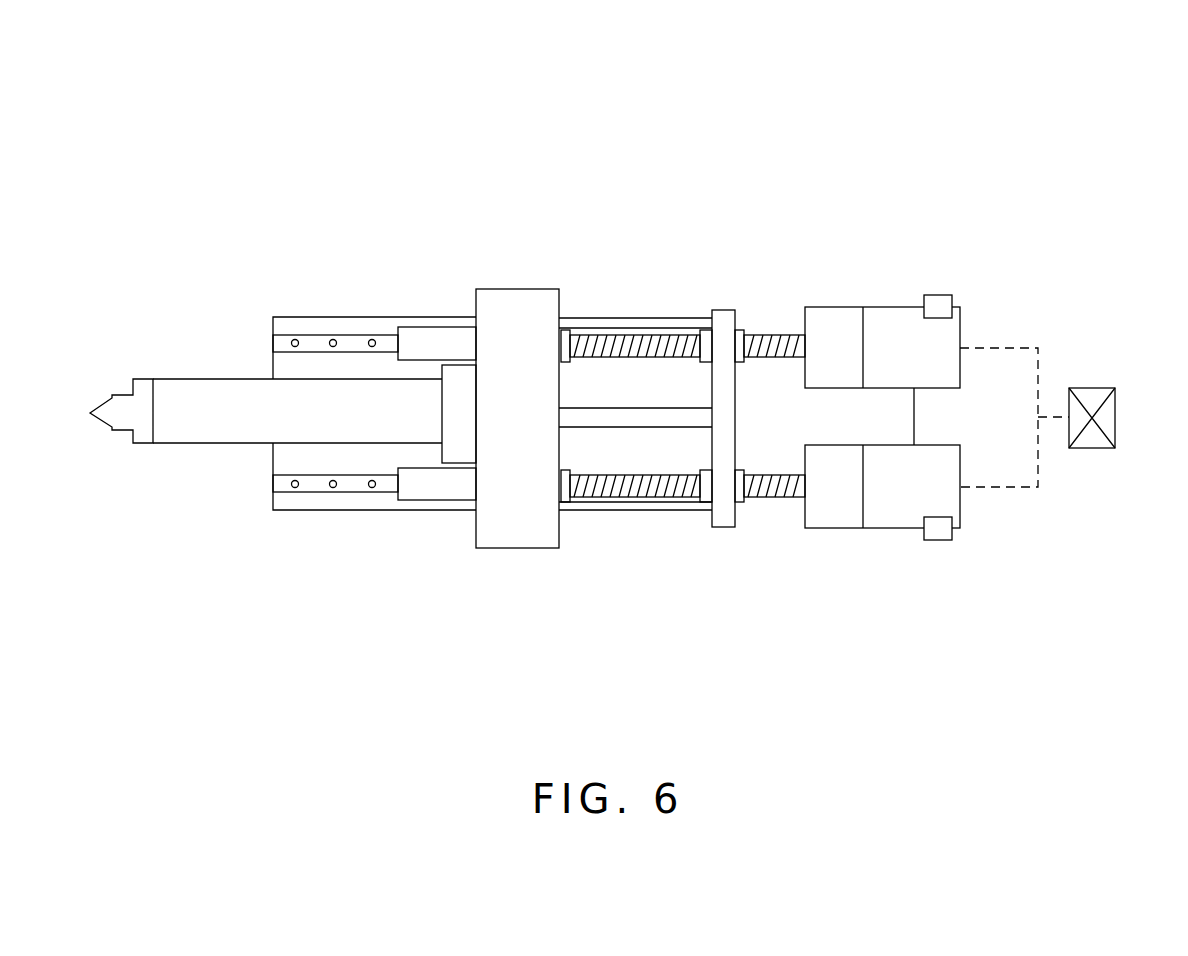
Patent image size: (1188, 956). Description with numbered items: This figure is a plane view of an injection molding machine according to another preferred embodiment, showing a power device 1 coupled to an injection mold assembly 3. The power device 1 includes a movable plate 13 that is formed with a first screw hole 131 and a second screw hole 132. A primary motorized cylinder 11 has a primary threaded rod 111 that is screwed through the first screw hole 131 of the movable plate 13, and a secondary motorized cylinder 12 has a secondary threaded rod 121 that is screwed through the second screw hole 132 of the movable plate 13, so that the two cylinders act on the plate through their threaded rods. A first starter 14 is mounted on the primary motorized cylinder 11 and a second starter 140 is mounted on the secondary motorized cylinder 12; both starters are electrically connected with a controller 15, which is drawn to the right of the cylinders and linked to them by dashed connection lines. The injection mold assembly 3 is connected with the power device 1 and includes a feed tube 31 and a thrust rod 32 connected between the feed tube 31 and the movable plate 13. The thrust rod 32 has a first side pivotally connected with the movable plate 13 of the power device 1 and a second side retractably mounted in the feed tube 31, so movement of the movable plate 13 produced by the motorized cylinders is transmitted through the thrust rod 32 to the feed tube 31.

The power device 1 is at (978, 158).
The injection mold assembly 3 is at (455, 123).
The feed tube 31 is at (333, 410).
The thrust rod 32 is at (588, 417).
The movable plate 13 is at (723, 327).
The first screw hole 131 is at (690, 334).
The second screw hole 132 is at (688, 494).
The primary motorized cylinder 11 is at (818, 325).
The primary threaded rod 111 is at (777, 338).
The secondary motorized cylinder 12 is at (817, 512).
The secondary threaded rod 121 is at (787, 494).
The first starter 14 is at (937, 308).
The second starter 140 is at (938, 528).
The controller 15 is at (1100, 398).